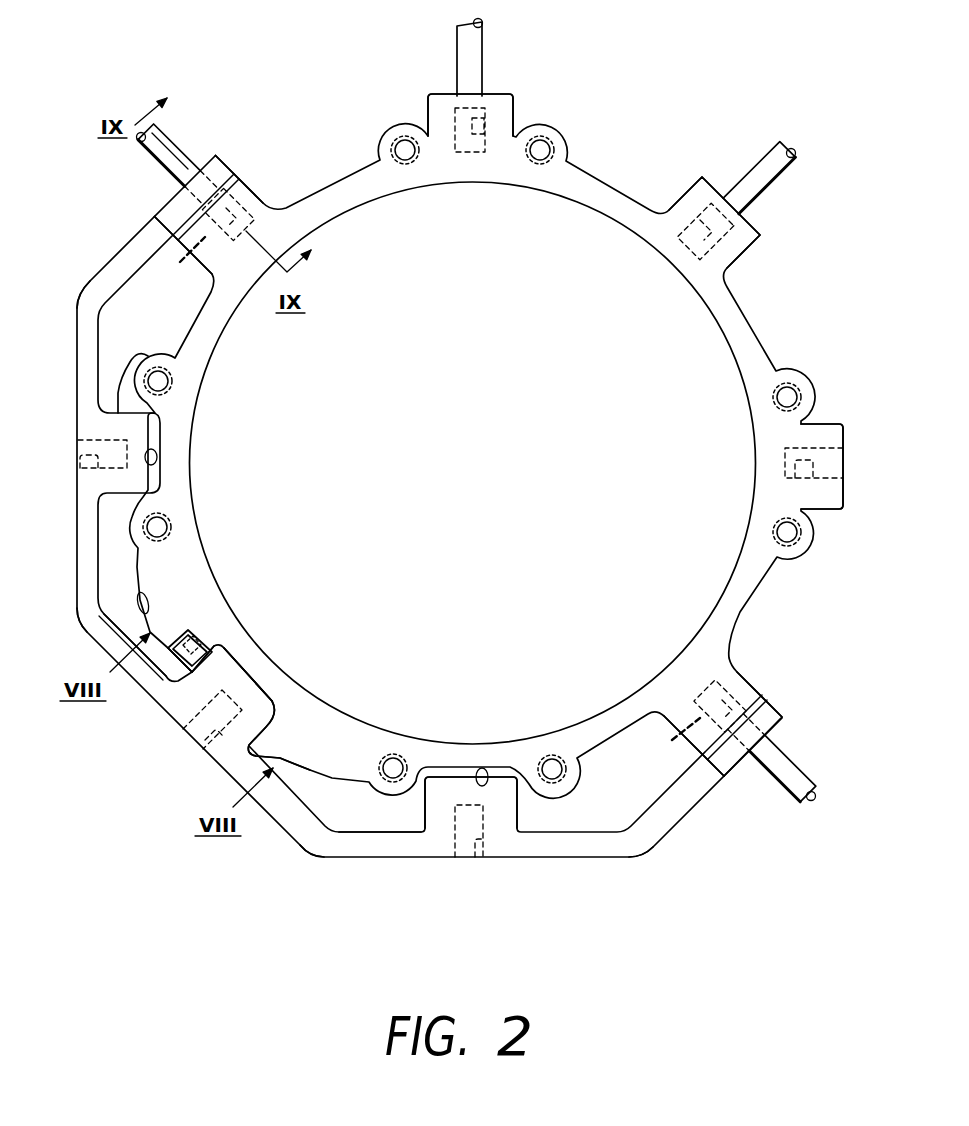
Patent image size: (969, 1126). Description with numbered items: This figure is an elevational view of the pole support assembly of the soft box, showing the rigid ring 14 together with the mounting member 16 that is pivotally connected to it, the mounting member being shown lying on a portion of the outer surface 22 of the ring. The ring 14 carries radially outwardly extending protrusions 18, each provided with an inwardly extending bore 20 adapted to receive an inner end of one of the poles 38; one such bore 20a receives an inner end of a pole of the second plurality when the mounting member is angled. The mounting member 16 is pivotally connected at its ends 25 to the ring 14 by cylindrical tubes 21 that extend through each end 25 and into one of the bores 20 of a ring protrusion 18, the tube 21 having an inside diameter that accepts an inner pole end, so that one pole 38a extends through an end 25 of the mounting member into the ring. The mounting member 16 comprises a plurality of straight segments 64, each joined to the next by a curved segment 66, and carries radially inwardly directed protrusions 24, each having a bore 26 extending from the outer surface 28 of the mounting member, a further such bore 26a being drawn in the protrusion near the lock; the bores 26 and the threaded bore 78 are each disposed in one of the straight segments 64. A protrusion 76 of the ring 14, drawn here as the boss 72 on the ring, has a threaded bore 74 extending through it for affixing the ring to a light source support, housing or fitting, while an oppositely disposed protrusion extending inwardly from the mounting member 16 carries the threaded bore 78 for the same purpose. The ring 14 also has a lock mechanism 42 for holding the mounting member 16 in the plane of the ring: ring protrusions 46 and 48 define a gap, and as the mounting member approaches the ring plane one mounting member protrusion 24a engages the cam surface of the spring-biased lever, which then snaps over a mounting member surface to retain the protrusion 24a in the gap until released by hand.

The rigid ring 14 is at (615, 223).
The mounting member 16 is at (123, 248).
The protrusions 18 is at (515, 100).
The bore 20 is at (485, 128).
The bore 20a is at (752, 683).
The cylindrical tubes 21 is at (426, 497).
The outer surface 22 is at (157, 460).
The protrusions 24 is at (202, 697).
The protrusion 24a is at (244, 676).
The ends 25 is at (198, 157).
The bore 26 is at (483, 857).
The bore 26a is at (198, 742).
The outer surface 28 is at (157, 705).
The poles 38 is at (483, 53).
The pole 38a is at (170, 125).
The lock mechanism 42 is at (216, 638).
The ring protrusion 46 is at (283, 722).
The ring protrusion 48 is at (150, 598).
The straight segments 64 is at (160, 210).
The curved segment 66 is at (80, 303).
The boss 72 is at (823, 423).
The threaded bore 74 is at (785, 462).
The protrusion 76 is at (136, 358).
The threaded bore 78 is at (80, 458).